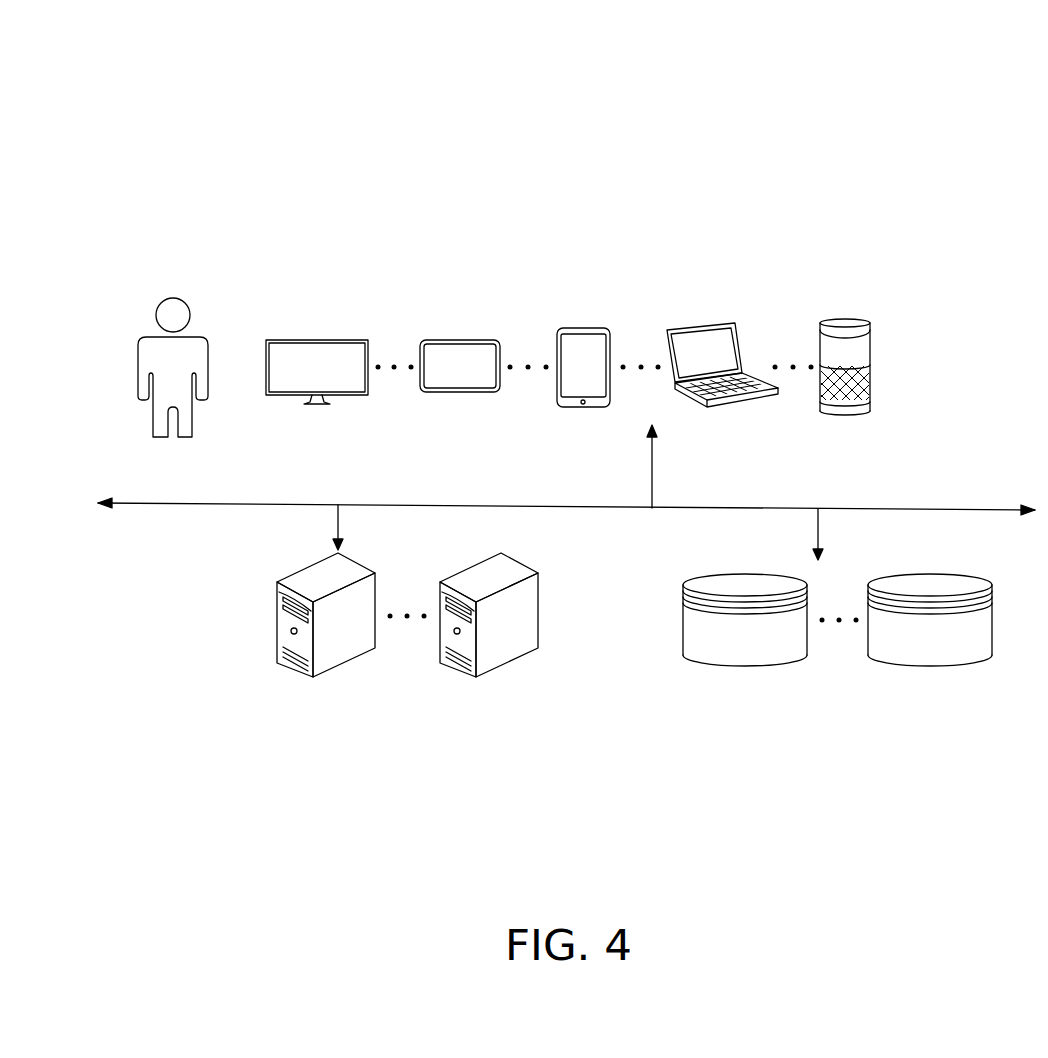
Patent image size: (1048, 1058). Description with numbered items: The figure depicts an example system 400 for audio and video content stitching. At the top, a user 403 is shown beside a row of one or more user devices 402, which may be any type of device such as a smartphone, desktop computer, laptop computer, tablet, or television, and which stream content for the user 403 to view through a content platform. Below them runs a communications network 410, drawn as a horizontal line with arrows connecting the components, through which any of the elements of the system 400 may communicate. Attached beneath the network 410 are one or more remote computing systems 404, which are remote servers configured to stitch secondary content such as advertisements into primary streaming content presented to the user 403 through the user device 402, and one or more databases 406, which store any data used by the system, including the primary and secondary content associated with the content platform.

The system 400 is at (132, 77).
The user device 402 is at (848, 303).
The user 403 is at (173, 298).
The remote computing system 404 is at (415, 706).
The database 406 is at (806, 709).
The communications network 410 is at (768, 507).